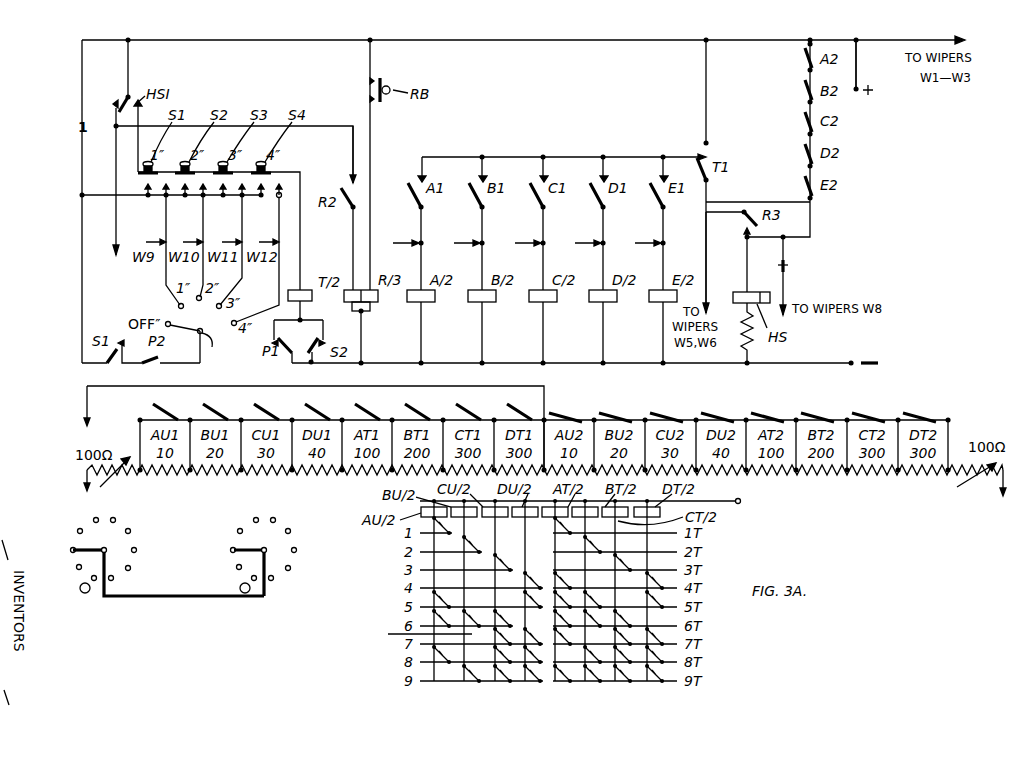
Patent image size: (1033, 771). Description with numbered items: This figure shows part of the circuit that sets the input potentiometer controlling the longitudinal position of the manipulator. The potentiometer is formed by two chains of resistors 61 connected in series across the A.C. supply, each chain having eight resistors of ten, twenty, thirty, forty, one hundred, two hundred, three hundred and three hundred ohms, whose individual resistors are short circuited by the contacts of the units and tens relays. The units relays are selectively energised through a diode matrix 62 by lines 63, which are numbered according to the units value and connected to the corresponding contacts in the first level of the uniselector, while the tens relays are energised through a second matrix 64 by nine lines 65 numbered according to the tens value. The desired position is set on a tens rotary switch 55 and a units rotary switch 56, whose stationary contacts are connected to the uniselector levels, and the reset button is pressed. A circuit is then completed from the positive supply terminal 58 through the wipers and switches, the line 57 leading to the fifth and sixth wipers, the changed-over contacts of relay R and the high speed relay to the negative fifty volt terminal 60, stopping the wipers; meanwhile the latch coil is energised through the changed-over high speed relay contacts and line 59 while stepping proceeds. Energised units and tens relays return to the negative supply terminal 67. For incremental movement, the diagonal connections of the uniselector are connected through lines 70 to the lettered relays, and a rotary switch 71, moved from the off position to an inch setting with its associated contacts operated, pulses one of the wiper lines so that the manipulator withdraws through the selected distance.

The tens rotary switch 55 is at (118, 543).
The units rotary switch 56 is at (255, 543).
The line to wipers W5, W6 57 is at (708, 256).
The positive supply terminal 58 is at (859, 96).
The latch coil line 59 is at (118, 205).
The negative fifty volt terminal 60 is at (851, 360).
The chains of resistors 61 is at (901, 497).
The diode matrix 62 is at (418, 635).
The units lines 63 is at (428, 680).
The second matrix 64 is at (651, 591).
The tens lines 65 is at (686, 681).
The negative supply terminal 67 is at (741, 501).
The line to relay 70 is at (523, 235).
The rotary switch 71 is at (217, 346).